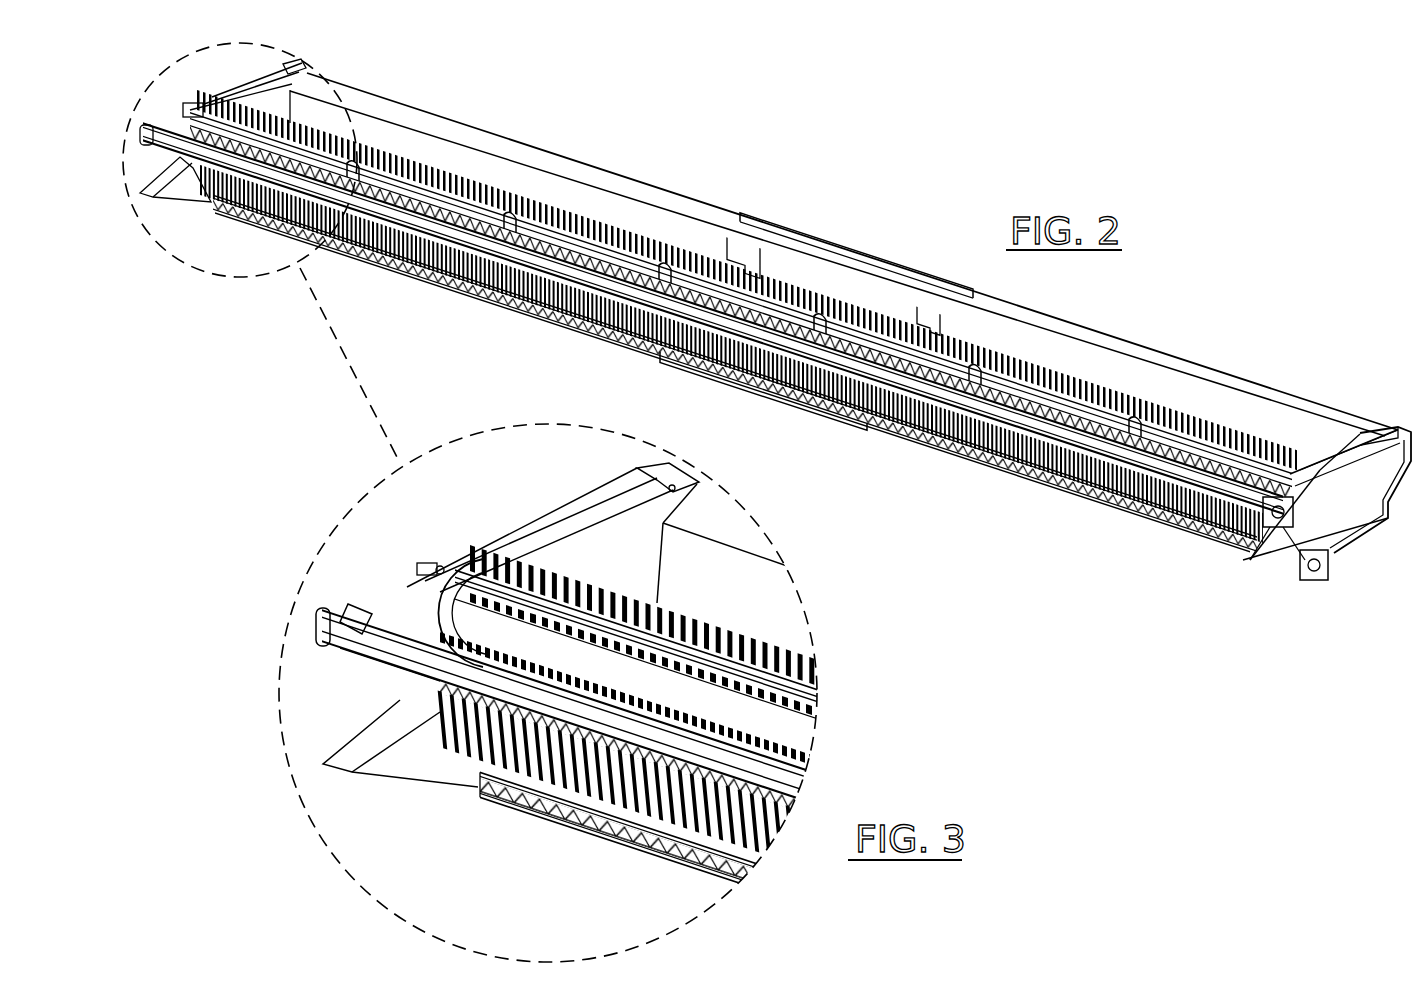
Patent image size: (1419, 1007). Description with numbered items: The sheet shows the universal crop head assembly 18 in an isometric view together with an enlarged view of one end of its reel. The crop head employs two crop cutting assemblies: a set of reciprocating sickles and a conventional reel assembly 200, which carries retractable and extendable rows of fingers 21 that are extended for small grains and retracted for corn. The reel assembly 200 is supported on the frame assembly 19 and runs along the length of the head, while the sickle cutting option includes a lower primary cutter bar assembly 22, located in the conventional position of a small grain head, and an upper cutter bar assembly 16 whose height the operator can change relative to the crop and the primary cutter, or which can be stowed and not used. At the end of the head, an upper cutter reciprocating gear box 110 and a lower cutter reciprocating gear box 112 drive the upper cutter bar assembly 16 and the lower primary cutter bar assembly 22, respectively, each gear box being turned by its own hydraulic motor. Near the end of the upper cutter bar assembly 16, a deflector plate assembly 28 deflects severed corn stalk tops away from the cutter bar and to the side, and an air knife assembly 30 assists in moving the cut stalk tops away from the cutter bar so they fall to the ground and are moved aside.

In FIG. 3, the upper cutter bar assembly 16 is at (388, 672).
In FIG. 2, the universal crop head assembly 18 is at (676, 172).
In FIG. 2, the frame assembly 19 is at (1298, 415).
In FIG. 3, the frame assembly 19 is at (360, 748).
In FIG. 3, the fingers 21 is at (673, 607).
In FIG. 3, the lower primary cutter bar assembly 22 is at (628, 834).
In FIG. 3, the deflector plate assembly 28 is at (365, 615).
In FIG. 3, the air knife assembly 30 is at (325, 622).
In FIG. 2, the upper cutter reciprocating gear box 110 is at (1290, 530).
In FIG. 2, the lower cutter reciprocating gear box 112 is at (1318, 582).
In FIG. 2, the conventional reel assembly 200 is at (1103, 380).
In FIG. 3, the conventional reel assembly 200 is at (718, 702).